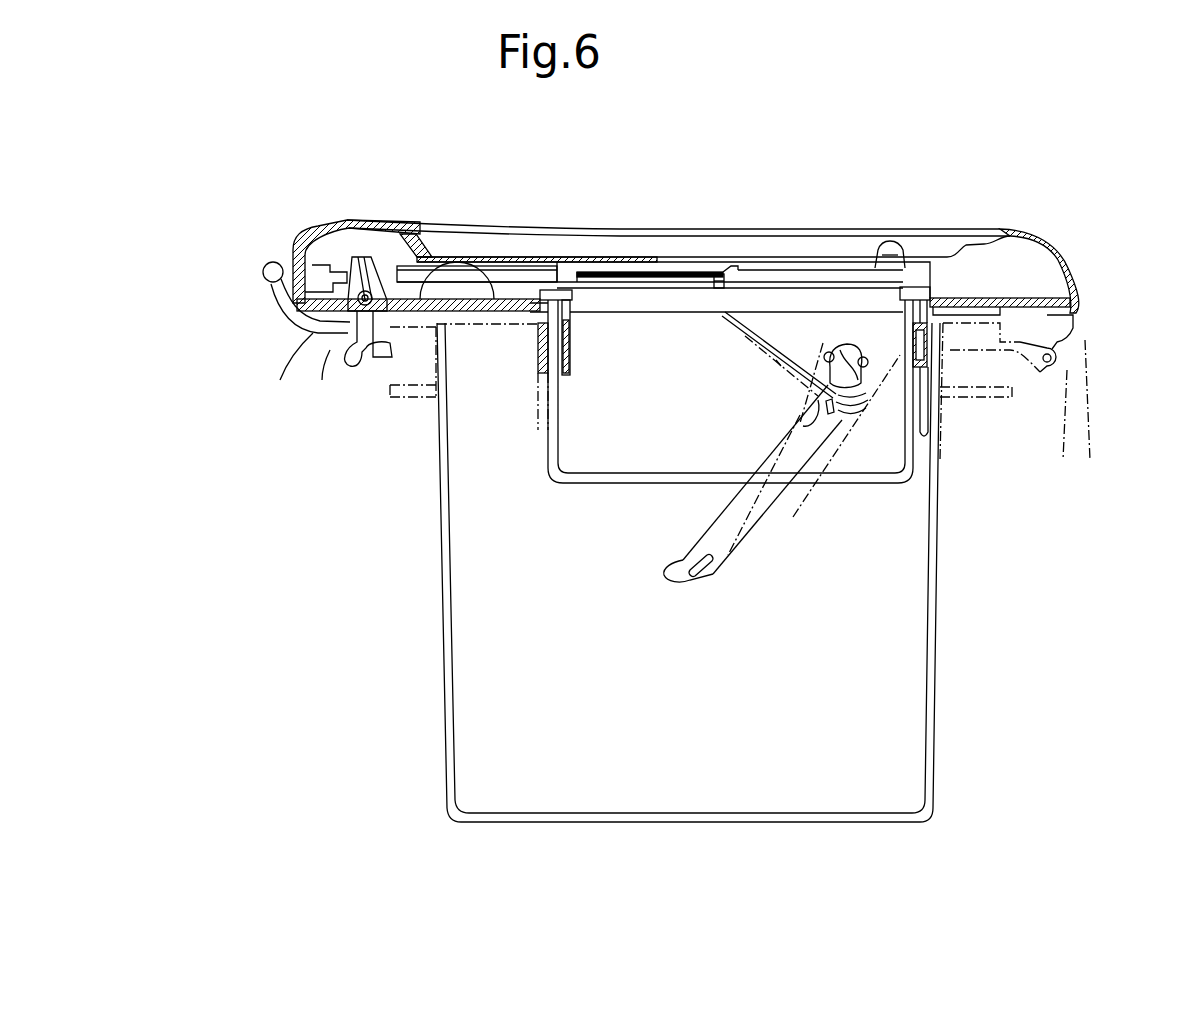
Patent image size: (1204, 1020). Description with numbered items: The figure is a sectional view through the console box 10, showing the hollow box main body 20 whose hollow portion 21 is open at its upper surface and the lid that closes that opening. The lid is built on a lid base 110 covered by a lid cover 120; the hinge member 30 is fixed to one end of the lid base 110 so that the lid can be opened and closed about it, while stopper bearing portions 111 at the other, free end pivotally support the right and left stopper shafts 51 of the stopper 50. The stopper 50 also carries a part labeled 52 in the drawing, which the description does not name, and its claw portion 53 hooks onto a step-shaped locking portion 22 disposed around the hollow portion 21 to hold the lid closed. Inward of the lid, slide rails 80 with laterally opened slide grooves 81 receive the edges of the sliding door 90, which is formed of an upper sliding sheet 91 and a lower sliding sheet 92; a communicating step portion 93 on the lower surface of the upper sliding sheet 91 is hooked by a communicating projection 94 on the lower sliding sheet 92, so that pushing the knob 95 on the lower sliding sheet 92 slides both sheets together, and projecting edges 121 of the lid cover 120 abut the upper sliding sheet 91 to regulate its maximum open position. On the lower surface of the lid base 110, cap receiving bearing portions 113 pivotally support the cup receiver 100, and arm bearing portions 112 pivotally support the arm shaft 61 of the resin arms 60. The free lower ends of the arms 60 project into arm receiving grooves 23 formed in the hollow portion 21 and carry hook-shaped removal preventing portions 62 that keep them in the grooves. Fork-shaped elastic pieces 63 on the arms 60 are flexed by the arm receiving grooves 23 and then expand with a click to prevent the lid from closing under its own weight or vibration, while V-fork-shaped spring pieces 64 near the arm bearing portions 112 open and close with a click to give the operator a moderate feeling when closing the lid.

The console box 10 is at (345, 152).
The box main body 20 is at (940, 690).
The hollow portion 21 is at (778, 770).
The locking portion 22 is at (387, 400).
The arm receiving grooves 23 is at (790, 428).
The hinge member 30 is at (1047, 375).
The stopper 50 is at (295, 316).
The stopper shafts 51 is at (313, 335).
The knob 52 is at (268, 265).
The claw portion 53 is at (357, 355).
The arms 60 is at (775, 493).
The arm shaft 61 is at (866, 390).
The removal preventing portions 62 is at (660, 582).
The elastic pieces 63 is at (712, 586).
The spring pieces 64 is at (828, 420).
The slide rails 80 is at (405, 266).
The slide grooves 81 is at (520, 278).
The sliding door 90 is at (805, 173).
The upper sliding sheet 91 is at (628, 271).
The lower sliding sheet 92 is at (795, 284).
The communicating step portion 93 is at (727, 290).
The communicating projection 94 is at (713, 285).
The knob 95 is at (892, 254).
The cup receiver 100 is at (580, 479).
The lid base 110 is at (1070, 334).
The stopper bearing portions 111 is at (340, 252).
The arm bearing portions 112 is at (932, 415).
The cap receiving bearing portions 113 is at (930, 320).
The lid cover 120 is at (1178, 340).
The projecting edges 121 is at (716, 266).